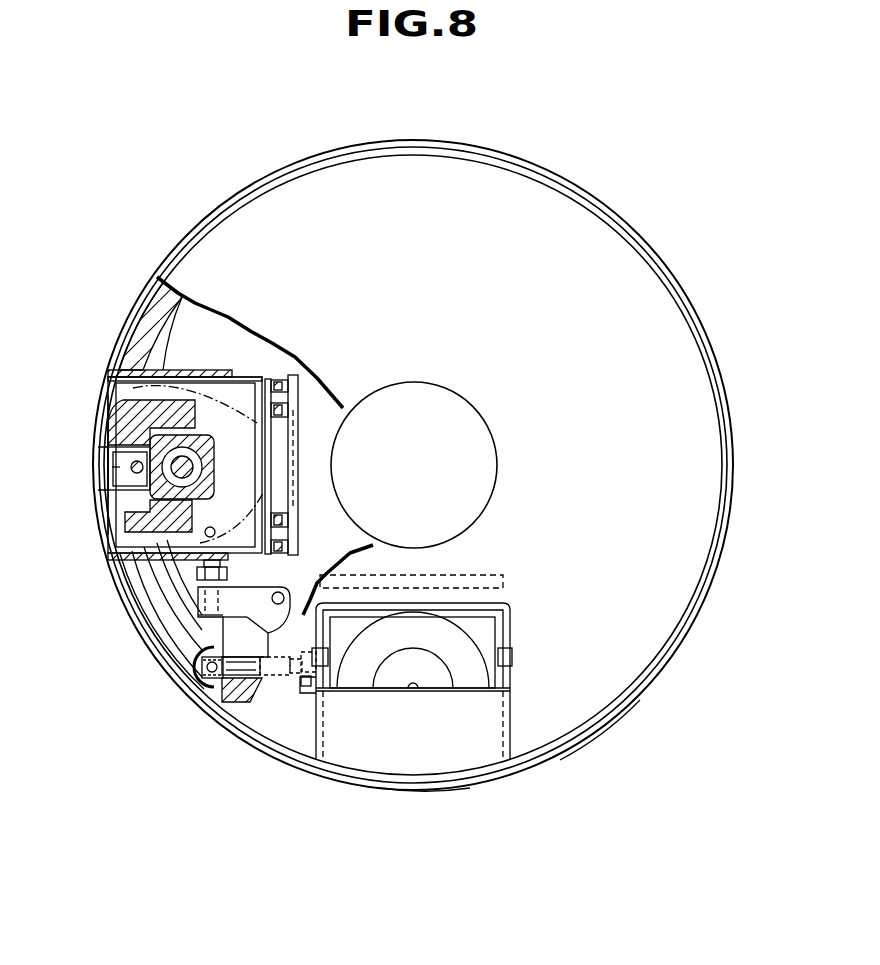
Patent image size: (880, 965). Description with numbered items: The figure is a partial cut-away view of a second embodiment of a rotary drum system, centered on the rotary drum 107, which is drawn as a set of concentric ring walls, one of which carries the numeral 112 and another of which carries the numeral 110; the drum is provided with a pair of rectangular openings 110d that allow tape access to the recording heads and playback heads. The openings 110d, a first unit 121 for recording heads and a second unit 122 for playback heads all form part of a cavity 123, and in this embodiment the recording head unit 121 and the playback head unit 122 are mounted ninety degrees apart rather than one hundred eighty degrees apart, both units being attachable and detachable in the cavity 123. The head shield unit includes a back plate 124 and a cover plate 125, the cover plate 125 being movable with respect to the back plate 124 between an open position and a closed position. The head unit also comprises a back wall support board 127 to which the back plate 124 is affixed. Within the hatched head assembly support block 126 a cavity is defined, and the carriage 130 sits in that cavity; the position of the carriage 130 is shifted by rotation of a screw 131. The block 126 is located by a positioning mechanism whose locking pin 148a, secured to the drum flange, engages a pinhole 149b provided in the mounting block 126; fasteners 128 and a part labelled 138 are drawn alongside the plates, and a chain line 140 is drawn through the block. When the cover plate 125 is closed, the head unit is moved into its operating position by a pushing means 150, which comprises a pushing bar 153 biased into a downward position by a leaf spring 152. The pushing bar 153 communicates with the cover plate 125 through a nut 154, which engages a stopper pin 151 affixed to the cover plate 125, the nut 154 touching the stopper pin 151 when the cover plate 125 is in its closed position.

The rotary drum 107 is at (592, 742).
The support ring 110 is at (157, 303).
The rectangular openings 110d is at (108, 491).
The drum wall 112 is at (610, 253).
The first unit for recording heads 121 is at (184, 356).
The second unit for playback heads 122 is at (427, 795).
The cavity 123 is at (190, 503).
The back plate 124 is at (224, 370).
The cover plate 125 is at (203, 368).
The head assembly support block 126 is at (123, 412).
The back wall support board 127 is at (263, 450).
The bolts 128 is at (285, 378).
The carriage 130 is at (205, 447).
The screw 131 is at (203, 470).
The clamp 138 is at (108, 462).
The circle of rotation 140 is at (133, 388).
The locking pin 148a is at (273, 531).
The pinhole 149b is at (175, 535).
The pushing means 150 is at (193, 616).
The stopper pin 151 is at (197, 572).
The leaf spring 152 is at (275, 618).
The pushing bar 153 is at (203, 633).
The nut 154 is at (197, 583).